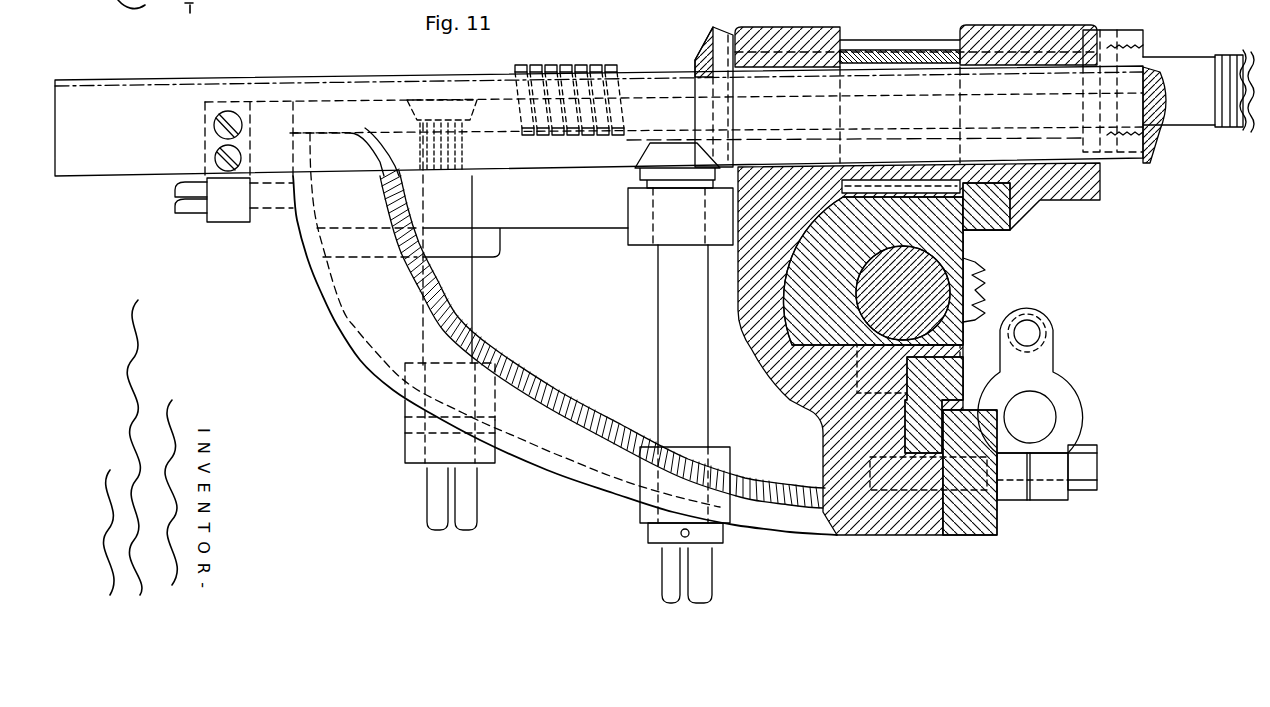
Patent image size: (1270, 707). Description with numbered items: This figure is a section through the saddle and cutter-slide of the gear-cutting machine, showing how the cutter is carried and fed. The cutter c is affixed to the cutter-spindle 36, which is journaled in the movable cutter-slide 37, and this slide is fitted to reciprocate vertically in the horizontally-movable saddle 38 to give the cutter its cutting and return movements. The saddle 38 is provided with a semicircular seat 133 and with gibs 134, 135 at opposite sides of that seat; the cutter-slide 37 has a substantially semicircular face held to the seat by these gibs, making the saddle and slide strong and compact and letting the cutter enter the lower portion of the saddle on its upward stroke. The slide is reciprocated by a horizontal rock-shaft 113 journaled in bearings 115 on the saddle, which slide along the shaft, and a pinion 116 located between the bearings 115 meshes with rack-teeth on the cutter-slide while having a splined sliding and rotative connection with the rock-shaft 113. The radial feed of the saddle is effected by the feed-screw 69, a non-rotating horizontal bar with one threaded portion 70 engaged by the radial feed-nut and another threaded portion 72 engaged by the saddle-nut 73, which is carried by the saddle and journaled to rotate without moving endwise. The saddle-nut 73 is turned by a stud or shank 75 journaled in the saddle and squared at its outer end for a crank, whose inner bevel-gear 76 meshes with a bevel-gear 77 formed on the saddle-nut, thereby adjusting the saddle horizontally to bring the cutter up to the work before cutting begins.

The cutter-spindle 36 is at (907, 272).
The cutter-slide 37 is at (773, 397).
The saddle 38 is at (898, 533).
The feed-screw 69 is at (1207, 117).
The threaded portion 70 is at (1238, 123).
The threaded portion 72 is at (577, 63).
The saddle-nut 73 is at (1140, 42).
The stud or shank 75 is at (700, 572).
The bevel-gear 76 is at (643, 155).
The bevel-gear 77 is at (700, 43).
The rock-shaft 113 is at (1127, 163).
The bearings 115 is at (767, 37).
The pinion 116 is at (902, 40).
The semicircular seat 133 is at (780, 310).
The gib 134 is at (1060, 424).
The gib 135 is at (987, 232).
The cutter C is at (987, 273).